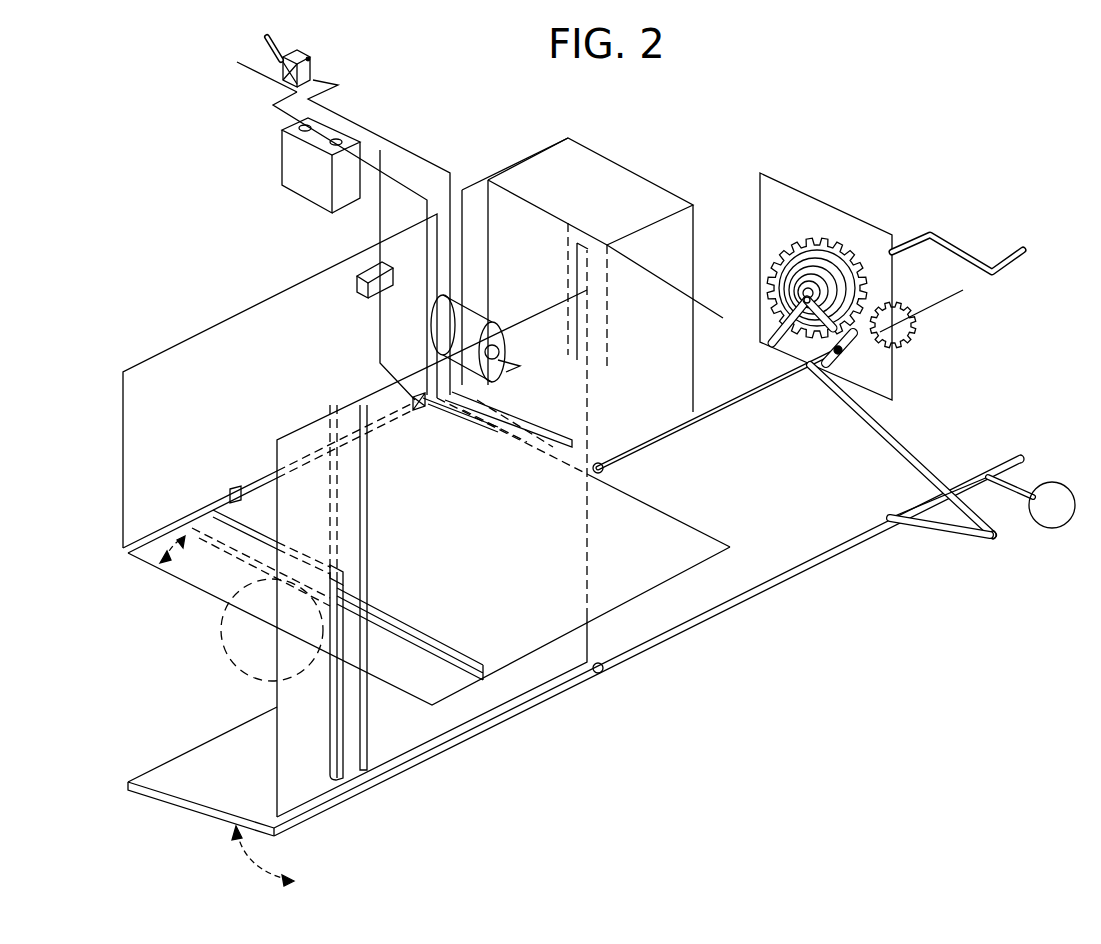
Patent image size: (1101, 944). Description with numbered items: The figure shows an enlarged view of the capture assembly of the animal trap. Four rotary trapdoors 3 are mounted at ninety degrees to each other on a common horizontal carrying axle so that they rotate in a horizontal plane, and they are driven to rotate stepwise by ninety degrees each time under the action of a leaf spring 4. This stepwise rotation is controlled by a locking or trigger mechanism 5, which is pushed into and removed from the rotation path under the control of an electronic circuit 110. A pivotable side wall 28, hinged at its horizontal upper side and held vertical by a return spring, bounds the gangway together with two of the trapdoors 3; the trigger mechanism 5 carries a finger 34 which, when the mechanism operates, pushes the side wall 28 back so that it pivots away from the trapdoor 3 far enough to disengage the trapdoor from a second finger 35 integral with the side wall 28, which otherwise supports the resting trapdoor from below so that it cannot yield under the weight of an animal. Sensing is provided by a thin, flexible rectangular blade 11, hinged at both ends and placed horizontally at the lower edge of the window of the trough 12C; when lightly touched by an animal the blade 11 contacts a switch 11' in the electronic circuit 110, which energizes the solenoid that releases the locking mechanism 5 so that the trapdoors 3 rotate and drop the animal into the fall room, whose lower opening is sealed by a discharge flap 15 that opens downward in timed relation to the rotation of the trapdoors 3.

The rotary trapdoors 3 is at (417, 512).
The leaf spring 4 is at (824, 246).
The locking or trigger mechanism 5 is at (420, 412).
The flexible rectangular blade 11 is at (508, 442).
The switch 11' is at (372, 540).
The trough 12C is at (640, 193).
The sealing discharge flap 15 is at (198, 770).
The pivotable side wall 28 is at (272, 397).
The finger 34 is at (422, 396).
The second finger 35 is at (234, 488).
The electronic circuit 110 is at (405, 183).